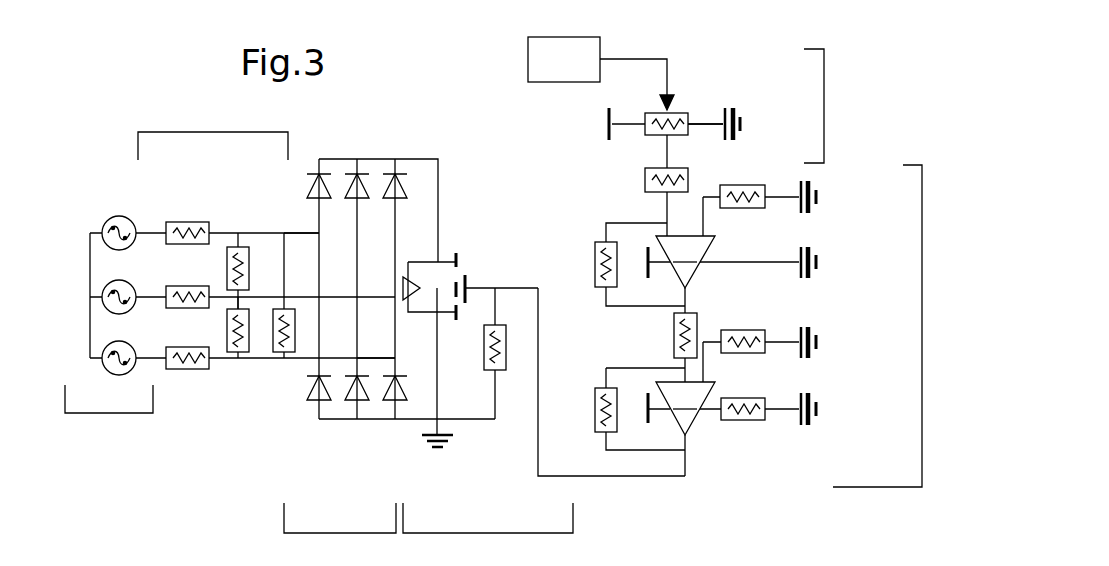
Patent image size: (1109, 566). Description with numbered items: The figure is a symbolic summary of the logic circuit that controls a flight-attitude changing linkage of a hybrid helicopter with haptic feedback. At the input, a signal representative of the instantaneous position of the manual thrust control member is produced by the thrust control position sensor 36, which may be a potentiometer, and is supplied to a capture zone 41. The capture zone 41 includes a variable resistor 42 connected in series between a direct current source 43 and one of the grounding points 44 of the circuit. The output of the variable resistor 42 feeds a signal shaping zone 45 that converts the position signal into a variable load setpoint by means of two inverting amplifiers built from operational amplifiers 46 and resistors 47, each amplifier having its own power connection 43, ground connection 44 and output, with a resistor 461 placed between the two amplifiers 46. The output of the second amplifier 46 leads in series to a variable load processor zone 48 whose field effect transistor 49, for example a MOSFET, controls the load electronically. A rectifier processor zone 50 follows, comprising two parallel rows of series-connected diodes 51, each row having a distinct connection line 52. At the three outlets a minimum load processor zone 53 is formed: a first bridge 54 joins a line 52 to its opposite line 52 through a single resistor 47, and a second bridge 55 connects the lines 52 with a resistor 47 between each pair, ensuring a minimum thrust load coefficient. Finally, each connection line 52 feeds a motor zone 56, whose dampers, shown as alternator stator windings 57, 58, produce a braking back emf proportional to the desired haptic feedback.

The thrust control position sensor 36 is at (564, 59).
The capture zone 41 is at (826, 78).
The variable resistor 42 is at (678, 112).
The direct current source 43 is at (607, 118).
The grounding point 44 is at (430, 432).
The signal shaping zone 45 is at (922, 402).
The operational amplifier 46 is at (681, 335).
The resistor 47 is at (234, 247).
The variable load processor zone 48 is at (477, 532).
The field effect transistor 49 is at (468, 248).
The rectifier processor zone 50 is at (368, 532).
The diode 51 is at (409, 183).
The connection line 52 is at (298, 229).
The minimum load processor zone 53 is at (170, 132).
The first bridge 54 is at (278, 248).
The second bridge 55 is at (228, 306).
The motor zone 56 is at (130, 413).
The alternator stator winding 57 is at (112, 284).
The alternator stator winding 58 is at (107, 347).
The resistor 461 is at (673, 328).